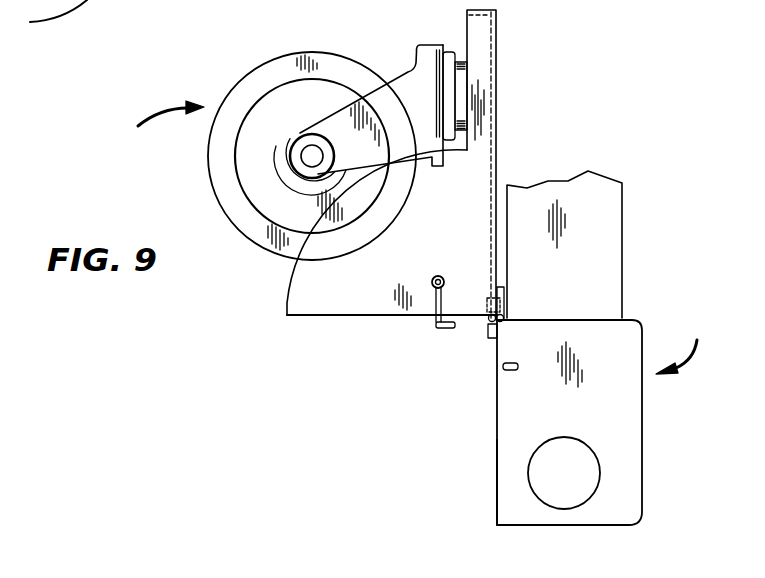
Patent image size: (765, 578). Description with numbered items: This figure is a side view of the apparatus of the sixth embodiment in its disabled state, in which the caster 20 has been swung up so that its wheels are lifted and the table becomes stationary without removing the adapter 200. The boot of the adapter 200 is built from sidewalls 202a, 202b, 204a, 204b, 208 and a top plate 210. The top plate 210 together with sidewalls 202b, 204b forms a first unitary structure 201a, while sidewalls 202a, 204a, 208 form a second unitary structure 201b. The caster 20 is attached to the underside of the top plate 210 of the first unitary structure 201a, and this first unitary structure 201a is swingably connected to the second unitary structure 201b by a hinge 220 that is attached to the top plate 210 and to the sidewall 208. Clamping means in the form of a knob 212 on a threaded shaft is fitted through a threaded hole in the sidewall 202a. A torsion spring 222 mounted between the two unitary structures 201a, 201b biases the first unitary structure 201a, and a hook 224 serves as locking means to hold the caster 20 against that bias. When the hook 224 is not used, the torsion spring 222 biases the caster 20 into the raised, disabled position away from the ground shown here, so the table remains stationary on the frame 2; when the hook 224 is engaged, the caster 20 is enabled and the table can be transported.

The frame member 2 is at (608, 260).
The caster 20 is at (258, 242).
The adapter 200 is at (531, 415).
The first unitary structure 201a is at (150, 128).
The second unitary structure 201b is at (684, 344).
The sidewall 202a is at (612, 438).
The sidewall 202b is at (392, 274).
The sidewall 204a is at (595, 512).
The sidewall 204b is at (367, 306).
The sidewall 208 is at (497, 497).
The top plate 210 is at (495, 38).
The knob 212 is at (567, 457).
The hinge 220 is at (508, 333).
The torsion spring 222 is at (487, 322).
The hook 224 is at (435, 322).